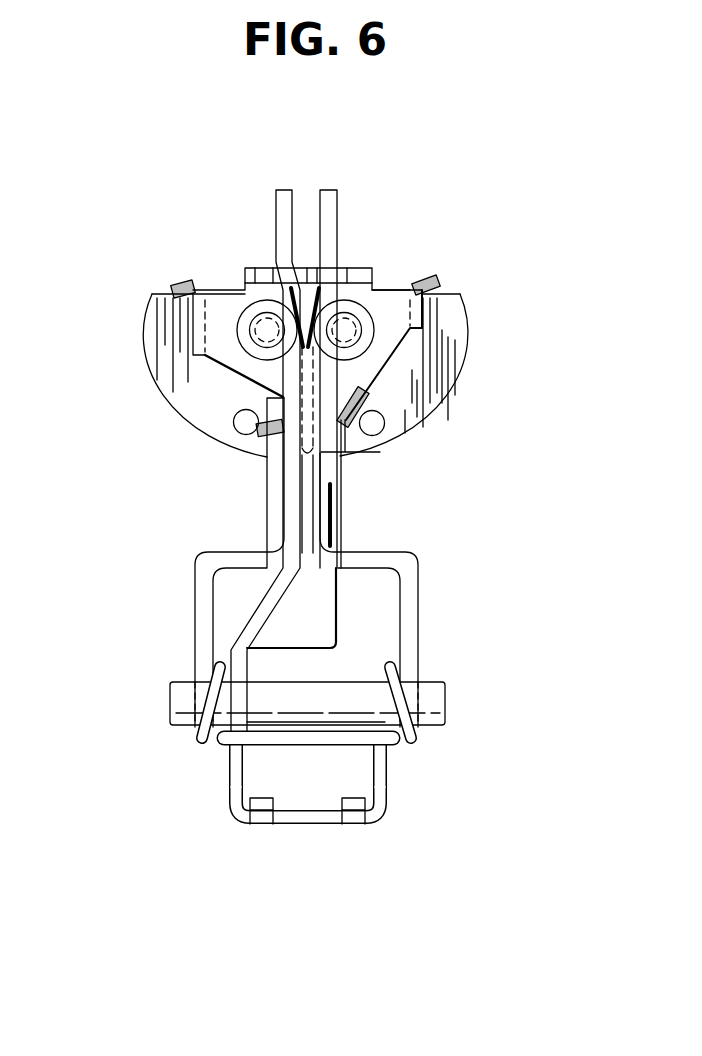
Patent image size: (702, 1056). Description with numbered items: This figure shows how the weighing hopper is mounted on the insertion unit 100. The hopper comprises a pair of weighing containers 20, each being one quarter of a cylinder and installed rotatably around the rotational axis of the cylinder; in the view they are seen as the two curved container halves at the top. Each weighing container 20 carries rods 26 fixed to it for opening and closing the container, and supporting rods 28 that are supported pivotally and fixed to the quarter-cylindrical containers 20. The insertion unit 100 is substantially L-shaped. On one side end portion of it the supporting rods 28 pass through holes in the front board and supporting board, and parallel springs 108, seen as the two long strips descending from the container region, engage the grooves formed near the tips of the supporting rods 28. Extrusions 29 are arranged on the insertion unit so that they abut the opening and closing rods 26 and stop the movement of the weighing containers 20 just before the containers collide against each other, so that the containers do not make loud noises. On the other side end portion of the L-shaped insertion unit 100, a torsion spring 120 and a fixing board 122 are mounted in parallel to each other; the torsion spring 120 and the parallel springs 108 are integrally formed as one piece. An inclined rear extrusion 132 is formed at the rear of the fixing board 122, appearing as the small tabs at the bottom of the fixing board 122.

The weighing containers 20 is at (150, 352).
The rods 26 is at (240, 432).
The supporting rods 28 is at (256, 280).
The extrusions 29 is at (175, 284).
The insertion unit 100 is at (259, 548).
The parallel springs 108 is at (287, 190).
The torsion spring 120 is at (353, 740).
The fixing board 122 is at (313, 825).
The rear extrusion 132 is at (262, 824).